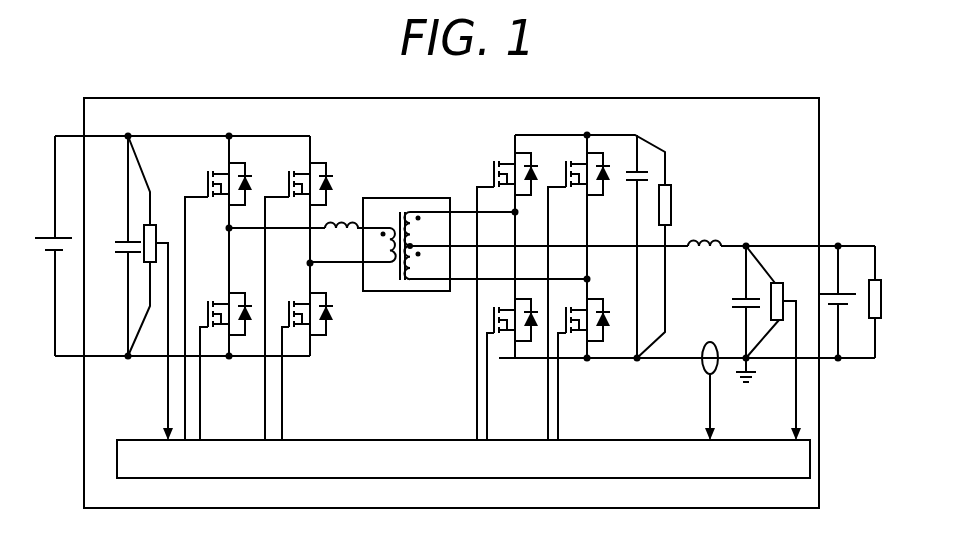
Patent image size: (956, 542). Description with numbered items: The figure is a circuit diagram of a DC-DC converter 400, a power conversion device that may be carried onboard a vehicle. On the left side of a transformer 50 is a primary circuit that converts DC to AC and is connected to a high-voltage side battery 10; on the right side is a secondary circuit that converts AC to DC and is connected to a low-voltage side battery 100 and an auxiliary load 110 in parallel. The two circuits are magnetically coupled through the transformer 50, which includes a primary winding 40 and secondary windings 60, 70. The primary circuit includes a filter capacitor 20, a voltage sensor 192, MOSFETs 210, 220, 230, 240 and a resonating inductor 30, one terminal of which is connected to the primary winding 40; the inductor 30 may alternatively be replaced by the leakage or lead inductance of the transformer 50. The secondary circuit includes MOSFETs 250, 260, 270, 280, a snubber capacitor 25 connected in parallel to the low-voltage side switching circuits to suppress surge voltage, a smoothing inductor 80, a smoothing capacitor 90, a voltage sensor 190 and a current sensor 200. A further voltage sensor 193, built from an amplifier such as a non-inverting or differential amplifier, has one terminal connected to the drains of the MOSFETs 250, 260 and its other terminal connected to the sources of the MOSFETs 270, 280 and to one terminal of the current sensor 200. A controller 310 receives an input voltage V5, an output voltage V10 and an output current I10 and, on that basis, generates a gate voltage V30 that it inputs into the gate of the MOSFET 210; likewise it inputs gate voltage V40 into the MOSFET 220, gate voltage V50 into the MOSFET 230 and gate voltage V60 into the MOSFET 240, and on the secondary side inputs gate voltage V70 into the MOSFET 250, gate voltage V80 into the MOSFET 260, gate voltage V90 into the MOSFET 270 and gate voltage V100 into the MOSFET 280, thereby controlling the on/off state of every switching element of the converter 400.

The high-voltage side battery 10 is at (38, 236).
The filter capacitor 20 is at (116, 240).
The voltage sensor 192 is at (158, 230).
The MOSFET 210 is at (209, 180).
The MOSFET 220 is at (214, 306).
The MOSFET 230 is at (290, 180).
The MOSFET 240 is at (294, 306).
The resonating inductor 30 is at (340, 230).
The transformer 50 is at (380, 227).
The primary winding 40 is at (353, 245).
The secondary winding 60 is at (421, 229).
The secondary winding 70 is at (421, 261).
The MOSFET 250 is at (494, 158).
The MOSFET 260 is at (596, 198).
The MOSFET 270 is at (500, 338).
The MOSFET 280 is at (590, 300).
The snubber capacitor 25 is at (641, 170).
The voltage sensor 193 is at (672, 198).
The smoothing inductor 80 is at (712, 240).
The smoothing capacitor 90 is at (740, 298).
The voltage sensor 190 is at (779, 282).
The low-voltage side battery 100 is at (847, 292).
The auxiliary load 110 is at (893, 282).
The current sensor 200 is at (702, 376).
The controller 310 is at (396, 438).
The DC-DC converter 400 is at (821, 146).
The input voltage V5 is at (150, 428).
The gate voltage V30 is at (185, 414).
The gate voltage V40 is at (200, 432).
The gate voltage V50 is at (265, 412).
The gate voltage V60 is at (282, 432).
The gate voltage V70 is at (477, 410).
The gate voltage V90 is at (487, 434).
The gate voltage V80 is at (548, 412).
The gate voltage V100 is at (558, 434).
The output current I10 is at (673, 429).
The output voltage V10 is at (772, 429).